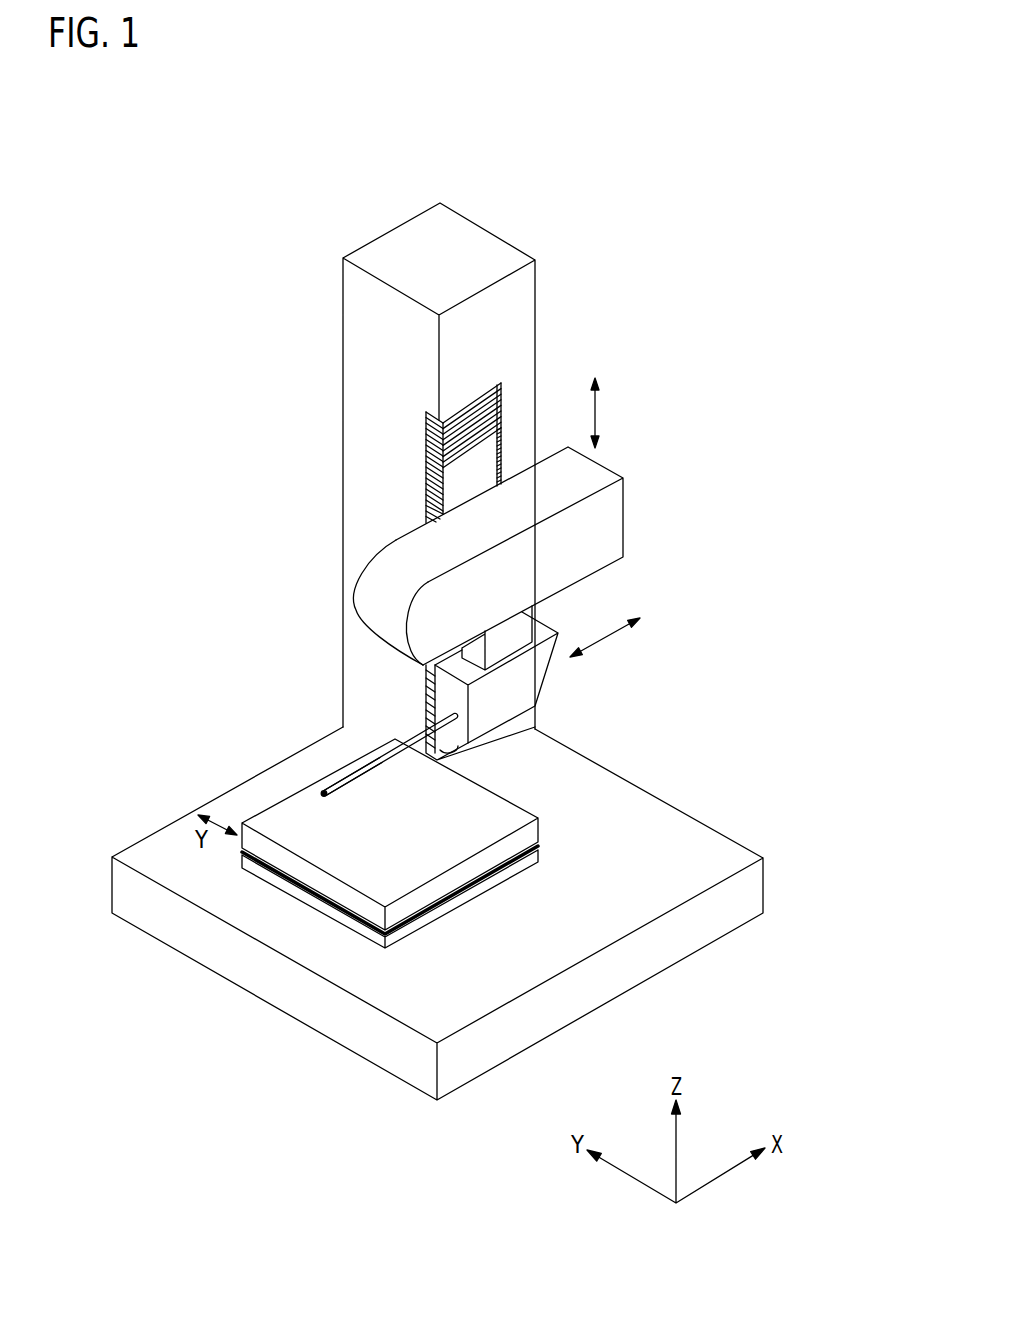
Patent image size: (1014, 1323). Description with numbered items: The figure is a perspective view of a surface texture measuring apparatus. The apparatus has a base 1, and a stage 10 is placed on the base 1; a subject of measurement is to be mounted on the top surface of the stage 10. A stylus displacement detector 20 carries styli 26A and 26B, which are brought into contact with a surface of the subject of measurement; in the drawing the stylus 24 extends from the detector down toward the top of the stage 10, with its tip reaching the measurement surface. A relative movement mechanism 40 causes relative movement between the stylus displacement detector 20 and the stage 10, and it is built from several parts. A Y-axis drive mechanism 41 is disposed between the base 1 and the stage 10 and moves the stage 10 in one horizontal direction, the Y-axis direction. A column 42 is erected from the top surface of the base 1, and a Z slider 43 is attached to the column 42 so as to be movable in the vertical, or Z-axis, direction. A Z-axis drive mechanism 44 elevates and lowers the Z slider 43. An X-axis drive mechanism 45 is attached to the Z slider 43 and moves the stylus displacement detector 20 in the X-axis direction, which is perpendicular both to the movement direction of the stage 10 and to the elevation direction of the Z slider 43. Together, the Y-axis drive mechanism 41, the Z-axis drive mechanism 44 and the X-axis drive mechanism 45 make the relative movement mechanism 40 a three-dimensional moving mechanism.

The base 1 is at (168, 838).
The stage 10 is at (333, 851).
The stylus displacement detector 20 is at (535, 687).
The stylus 24 is at (372, 765).
The stylus 26A is at (325, 789).
The stylus 26B is at (327, 800).
The relative movement mechanism 40 is at (224, 504).
The Y-axis drive mechanism 41 is at (457, 900).
The column 42 is at (357, 386).
The Z slider 43 is at (452, 482).
The Z-axis drive mechanism 44 is at (497, 400).
The X-axis drive mechanism 45 is at (613, 523).